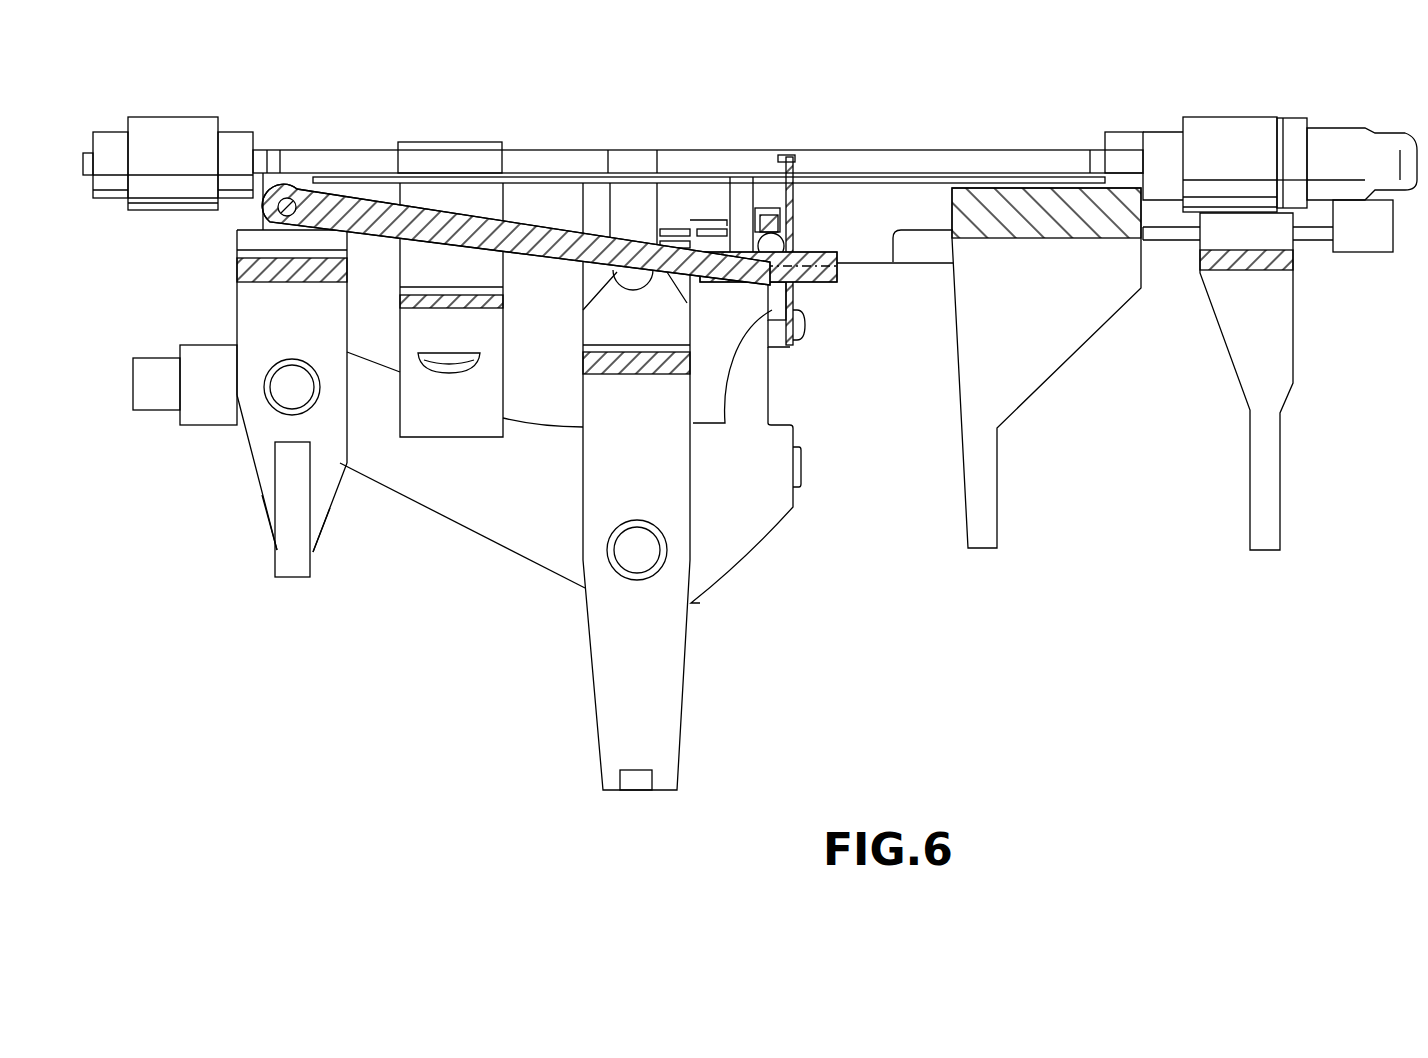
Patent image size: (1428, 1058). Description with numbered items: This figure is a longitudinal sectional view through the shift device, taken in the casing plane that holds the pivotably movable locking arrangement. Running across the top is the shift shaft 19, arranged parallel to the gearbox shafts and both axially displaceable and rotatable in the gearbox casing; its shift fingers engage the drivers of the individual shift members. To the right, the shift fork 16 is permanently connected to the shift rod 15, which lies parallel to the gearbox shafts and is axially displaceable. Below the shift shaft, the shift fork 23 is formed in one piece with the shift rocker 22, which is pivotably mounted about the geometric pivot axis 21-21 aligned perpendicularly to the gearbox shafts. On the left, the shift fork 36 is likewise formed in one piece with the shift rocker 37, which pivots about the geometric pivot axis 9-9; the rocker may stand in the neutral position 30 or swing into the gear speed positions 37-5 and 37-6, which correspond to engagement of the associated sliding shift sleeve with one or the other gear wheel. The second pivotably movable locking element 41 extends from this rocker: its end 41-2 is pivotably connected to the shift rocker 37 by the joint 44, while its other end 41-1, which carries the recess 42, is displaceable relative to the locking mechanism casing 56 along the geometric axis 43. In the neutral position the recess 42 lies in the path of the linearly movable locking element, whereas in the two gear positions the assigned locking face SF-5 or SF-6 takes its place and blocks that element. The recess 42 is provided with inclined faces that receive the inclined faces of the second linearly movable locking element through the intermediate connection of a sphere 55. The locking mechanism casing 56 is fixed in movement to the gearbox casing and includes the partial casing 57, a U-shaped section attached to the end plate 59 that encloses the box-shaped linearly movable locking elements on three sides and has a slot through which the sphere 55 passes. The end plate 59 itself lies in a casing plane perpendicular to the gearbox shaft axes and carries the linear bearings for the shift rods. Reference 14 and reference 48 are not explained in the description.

The housing body 14 is at (783, 570).
The shift rod 15 is at (1317, 247).
The shift fork 16 is at (1283, 436).
The shift shaft 19 is at (995, 147).
The geometric pivot axis 21-21 is at (633, 550).
The shift rocker 22 is at (580, 370).
The shift fork 23 is at (683, 703).
The neutral position 30 is at (292, 578).
The shift fork 36 is at (258, 493).
The shift rocker 37 is at (233, 322).
The gear speed position 37-5 is at (267, 560).
The gear speed position 37-6 is at (320, 556).
The second pivotably movable locking element 41 is at (522, 262).
The end of locking element 41-1 is at (813, 284).
The other end of locking element 41-2 is at (268, 207).
The recess 42 is at (767, 310).
The geometric axis 43 is at (700, 296).
The joint 44 is at (292, 188).
The support block 48 is at (985, 552).
The sphere 55 is at (806, 322).
The locking mechanism casing 56 is at (767, 207).
The partial casing 57 is at (750, 230).
The end plate 59 is at (796, 162).
The geometric pivot axis 9-9 is at (300, 386).
The locking face SF-5 is at (660, 222).
The locking face SF-6 is at (833, 260).